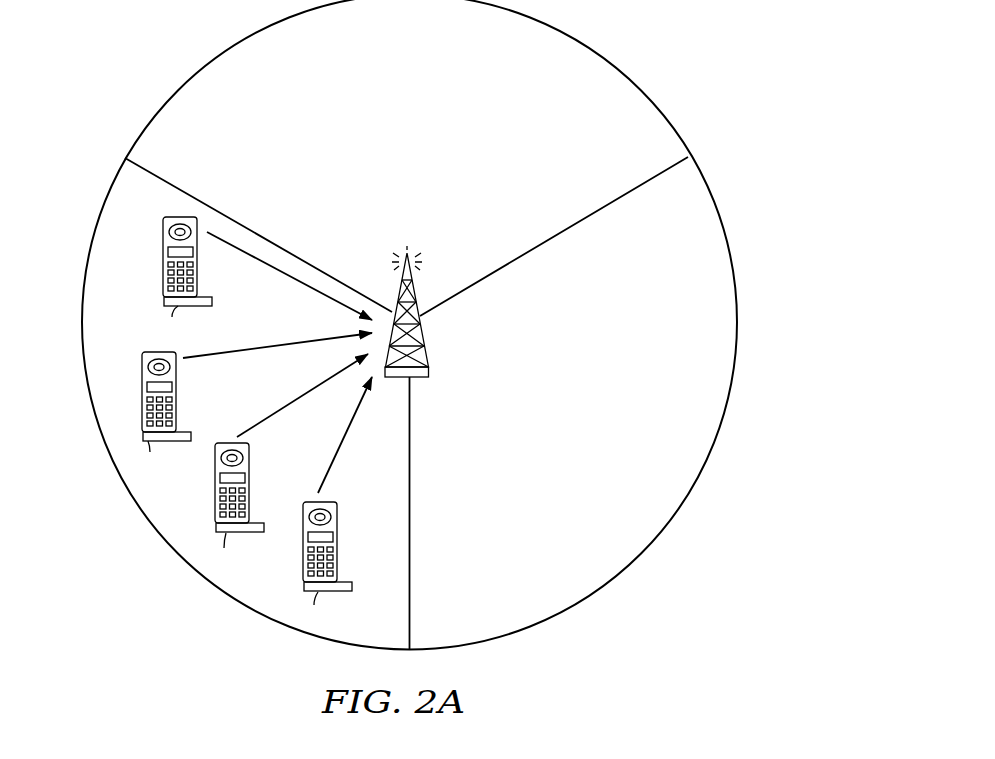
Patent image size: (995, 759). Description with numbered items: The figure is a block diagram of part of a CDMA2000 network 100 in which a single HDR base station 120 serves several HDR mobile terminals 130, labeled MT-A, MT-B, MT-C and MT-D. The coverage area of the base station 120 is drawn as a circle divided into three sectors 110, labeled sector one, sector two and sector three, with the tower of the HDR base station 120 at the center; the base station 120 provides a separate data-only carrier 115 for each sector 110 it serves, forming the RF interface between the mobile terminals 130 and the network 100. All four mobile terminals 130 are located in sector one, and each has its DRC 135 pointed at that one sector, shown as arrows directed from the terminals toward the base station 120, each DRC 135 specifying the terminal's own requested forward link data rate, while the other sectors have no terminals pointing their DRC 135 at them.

The CDMA2000 network 100 is at (92, 548).
The sector 110 is at (632, 108).
The DO carrier 115 is at (436, 245).
The HDR base station 120 is at (428, 377).
The HDR mobile terminal 130 is at (163, 243).
The DRC 135 is at (297, 377).